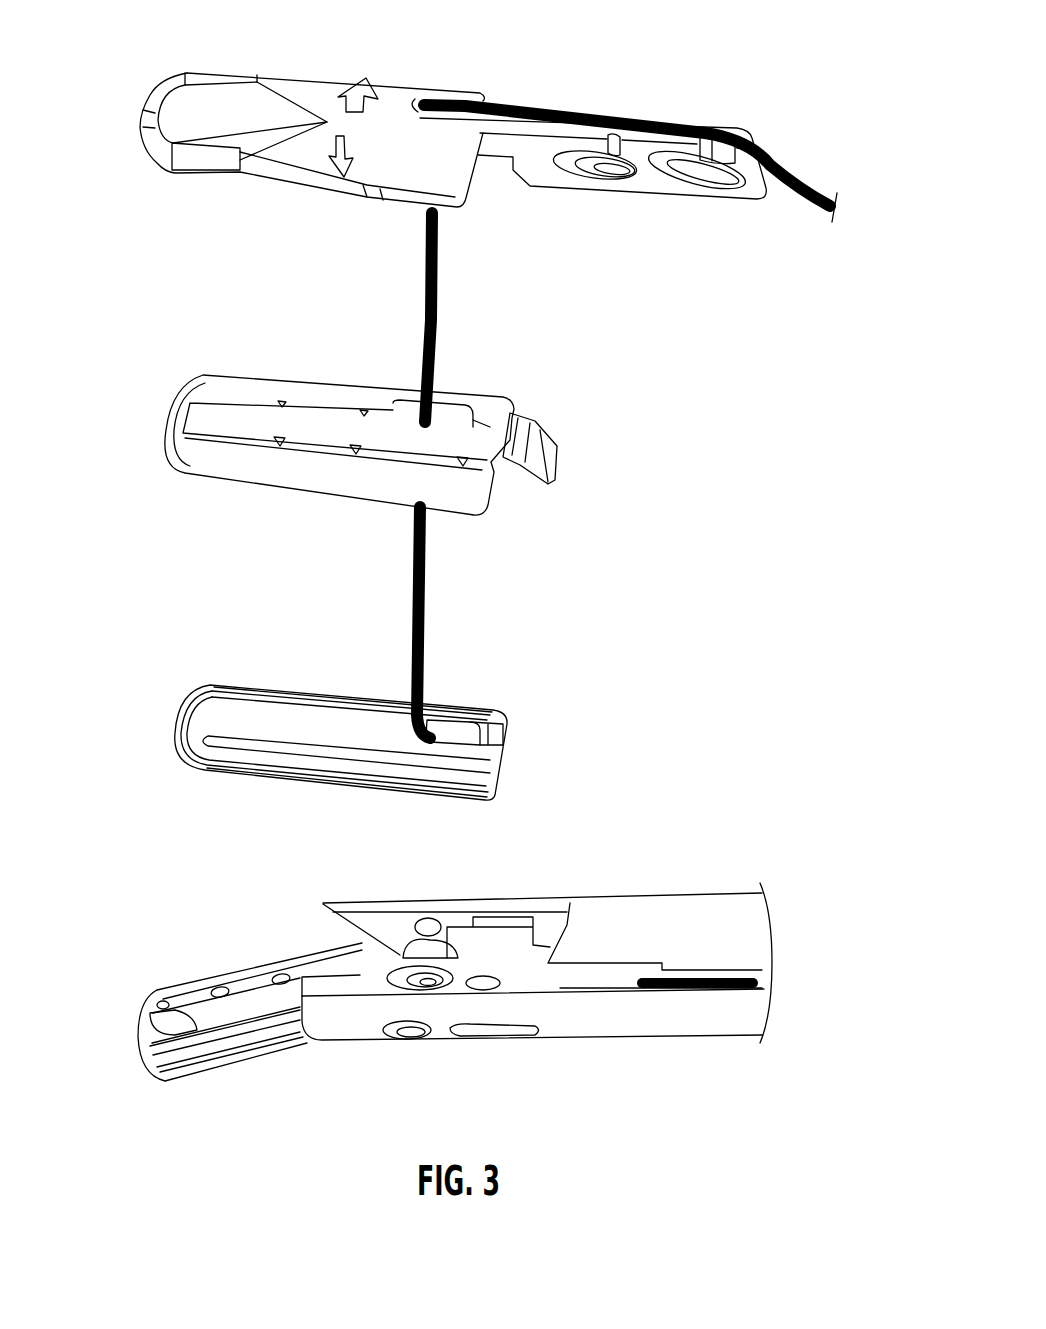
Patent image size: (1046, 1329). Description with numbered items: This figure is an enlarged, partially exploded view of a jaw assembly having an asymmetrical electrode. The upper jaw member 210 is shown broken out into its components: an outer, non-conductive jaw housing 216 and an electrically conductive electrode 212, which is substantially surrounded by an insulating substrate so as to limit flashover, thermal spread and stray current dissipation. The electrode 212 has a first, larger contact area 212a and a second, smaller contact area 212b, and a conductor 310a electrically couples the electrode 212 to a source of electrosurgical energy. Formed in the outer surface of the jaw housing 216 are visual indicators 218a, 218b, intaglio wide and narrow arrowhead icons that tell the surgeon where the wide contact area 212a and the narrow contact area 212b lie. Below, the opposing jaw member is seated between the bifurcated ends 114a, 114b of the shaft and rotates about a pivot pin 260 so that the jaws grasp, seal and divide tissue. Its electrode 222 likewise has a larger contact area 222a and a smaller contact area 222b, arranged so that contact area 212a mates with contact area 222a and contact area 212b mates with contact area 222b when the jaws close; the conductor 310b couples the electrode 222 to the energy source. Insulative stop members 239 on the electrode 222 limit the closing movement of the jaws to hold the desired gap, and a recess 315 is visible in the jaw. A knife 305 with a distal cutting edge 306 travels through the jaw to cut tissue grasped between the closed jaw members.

The jaw member 210 is at (173, 51).
The jaw housing 216 is at (318, 83).
The visual indicator 218a is at (370, 83).
The visual indicator 218b is at (337, 167).
The conductor 310a is at (792, 185).
The conductor 310b is at (718, 990).
The electrode 212 is at (317, 744).
The first, larger contact area 212a is at (280, 695).
The second smaller contact area 212b is at (310, 773).
The first jaw member 114a is at (513, 931).
The second jaw member 114b is at (368, 1027).
The electrode 222 is at (201, 1003).
The first, larger contact area 222a is at (253, 982).
The second smaller contact area 222b is at (198, 1033).
The stop member 239 is at (283, 975).
The recess 315 is at (178, 1029).
The distal cutting edge 306 is at (353, 958).
The knife 305 is at (383, 953).
The pivot pin 260 is at (433, 920).